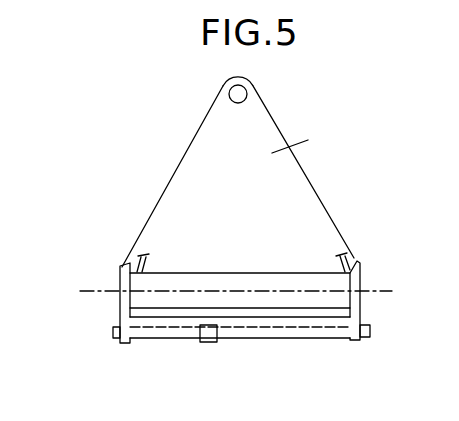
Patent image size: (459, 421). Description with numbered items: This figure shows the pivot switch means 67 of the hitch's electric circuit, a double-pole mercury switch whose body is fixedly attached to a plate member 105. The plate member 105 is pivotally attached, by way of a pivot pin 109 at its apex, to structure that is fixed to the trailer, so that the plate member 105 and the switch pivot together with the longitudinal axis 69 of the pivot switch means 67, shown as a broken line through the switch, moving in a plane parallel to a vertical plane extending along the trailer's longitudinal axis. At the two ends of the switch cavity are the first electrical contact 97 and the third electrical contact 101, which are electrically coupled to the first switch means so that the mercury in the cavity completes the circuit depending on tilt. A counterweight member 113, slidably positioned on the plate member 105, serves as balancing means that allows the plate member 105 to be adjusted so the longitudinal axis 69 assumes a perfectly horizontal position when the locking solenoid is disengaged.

The pivot switch means 67 is at (258, 246).
The longitudinal axis 69 is at (380, 283).
The first electrical contact 97 is at (120, 266).
The third electrical contact 101 is at (355, 257).
The plate member 105 is at (300, 141).
The pivot pin 109 is at (243, 95).
The counterweight member 113 is at (205, 342).